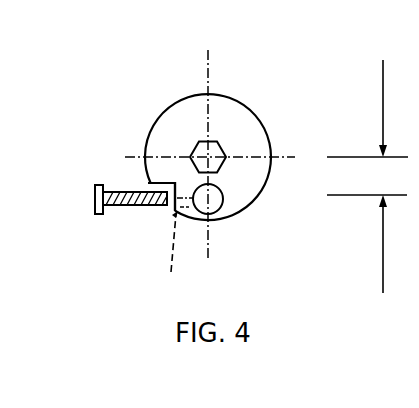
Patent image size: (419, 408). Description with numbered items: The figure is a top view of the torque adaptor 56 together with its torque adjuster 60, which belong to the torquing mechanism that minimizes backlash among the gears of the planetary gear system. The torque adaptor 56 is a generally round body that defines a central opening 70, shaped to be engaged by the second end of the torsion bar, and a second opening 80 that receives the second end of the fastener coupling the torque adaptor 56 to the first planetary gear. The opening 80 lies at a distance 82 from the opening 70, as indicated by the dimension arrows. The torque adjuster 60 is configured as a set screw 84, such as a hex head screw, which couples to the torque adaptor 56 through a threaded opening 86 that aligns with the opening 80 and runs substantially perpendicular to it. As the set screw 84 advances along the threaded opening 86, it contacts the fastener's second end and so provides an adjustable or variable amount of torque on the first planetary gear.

The torque adaptor 56 is at (254, 95).
The torque adjuster 60 is at (115, 177).
The opening 70 is at (226, 152).
The opening 80 is at (223, 198).
The distance 82 is at (383, 252).
The set screw 84 is at (135, 206).
The threaded opening 86 is at (171, 272).